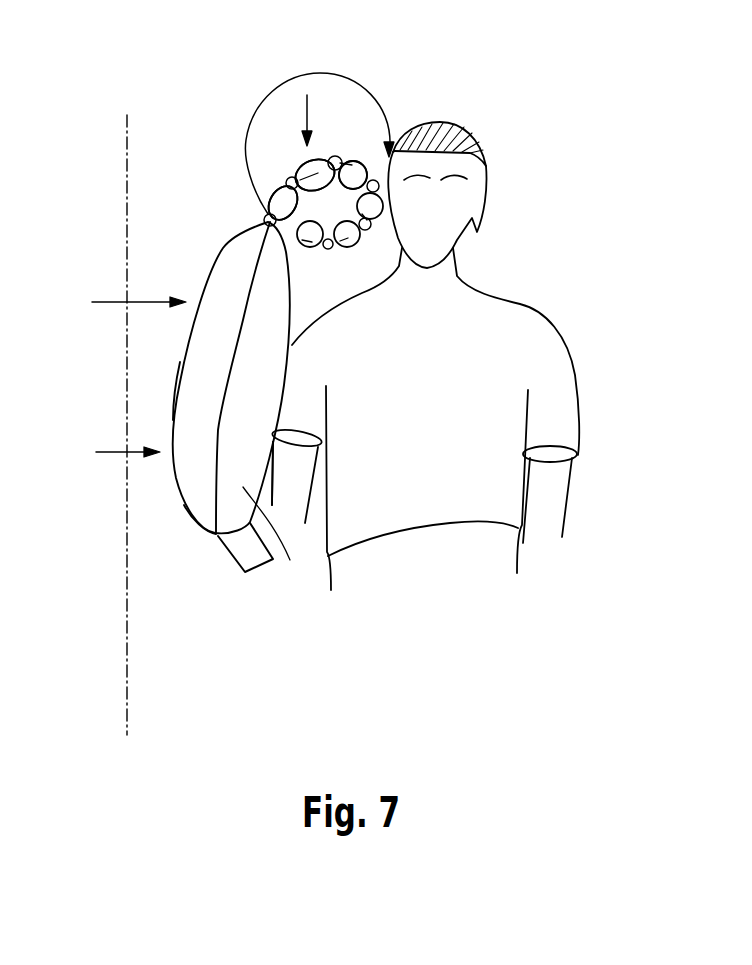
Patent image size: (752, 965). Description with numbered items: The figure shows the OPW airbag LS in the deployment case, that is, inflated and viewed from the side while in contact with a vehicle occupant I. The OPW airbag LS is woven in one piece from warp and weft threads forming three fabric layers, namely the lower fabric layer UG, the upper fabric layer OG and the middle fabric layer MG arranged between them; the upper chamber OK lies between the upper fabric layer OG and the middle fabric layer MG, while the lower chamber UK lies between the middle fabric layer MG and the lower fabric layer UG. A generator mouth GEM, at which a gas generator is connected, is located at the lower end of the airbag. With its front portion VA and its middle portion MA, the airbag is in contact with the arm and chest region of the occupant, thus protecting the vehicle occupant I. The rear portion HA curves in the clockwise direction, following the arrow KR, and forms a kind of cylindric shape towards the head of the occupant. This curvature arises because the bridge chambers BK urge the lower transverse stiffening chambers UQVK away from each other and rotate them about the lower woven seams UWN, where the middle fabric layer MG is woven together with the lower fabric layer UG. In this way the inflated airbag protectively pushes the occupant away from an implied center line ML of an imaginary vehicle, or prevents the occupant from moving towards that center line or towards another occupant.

The center line ML is at (127, 153).
The arrow KR is at (286, 82).
The lower transverse stiffening chamber UQVK is at (318, 173).
The rear portion HA is at (290, 120).
The bridge chamber BK is at (330, 160).
The upper chamber OK is at (223, 280).
The middle portion MA is at (115, 304).
The upper fabric layer OG is at (178, 376).
The middle fabric layer MG is at (218, 413).
The front portion VA is at (106, 454).
The OPW airbag LS is at (200, 500).
The generator mouth GEM is at (268, 553).
The lower woven seam UWN is at (328, 250).
The lower fabric layer UG is at (266, 483).
The lower chamber UK is at (243, 487).
The vehicle occupant I is at (571, 298).